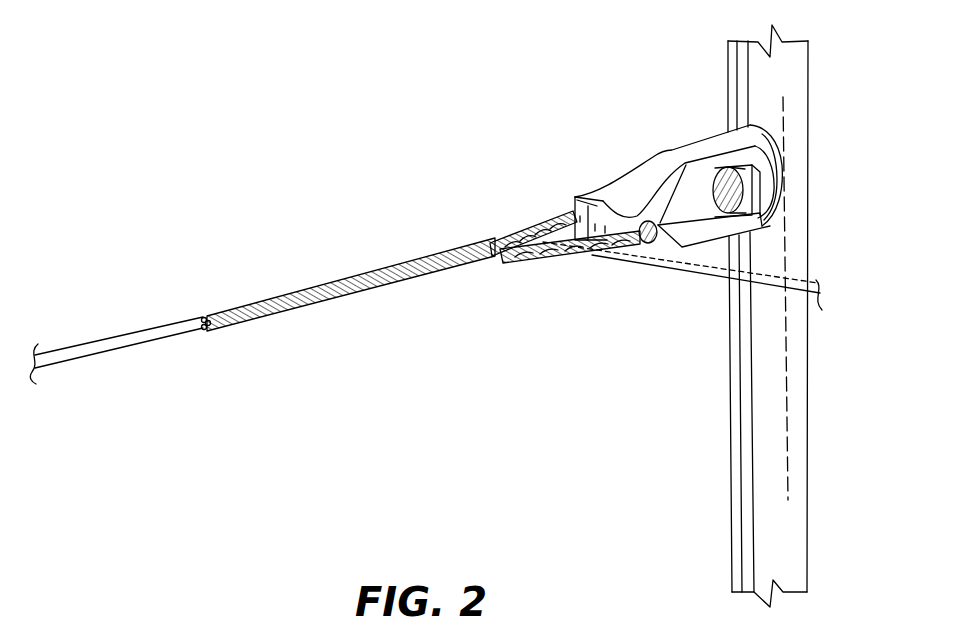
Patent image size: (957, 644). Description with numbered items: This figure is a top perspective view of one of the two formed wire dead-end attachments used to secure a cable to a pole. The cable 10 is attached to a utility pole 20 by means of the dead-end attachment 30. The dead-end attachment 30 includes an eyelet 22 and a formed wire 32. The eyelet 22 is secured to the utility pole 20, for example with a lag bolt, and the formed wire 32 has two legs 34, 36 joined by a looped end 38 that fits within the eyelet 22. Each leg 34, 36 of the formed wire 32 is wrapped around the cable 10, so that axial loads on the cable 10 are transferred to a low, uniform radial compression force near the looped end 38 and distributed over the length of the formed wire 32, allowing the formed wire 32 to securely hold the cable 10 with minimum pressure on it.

The cable 10 is at (112, 340).
The utility pole 20 is at (810, 77).
The eyelet 22 is at (672, 149).
The dead-end attachment 30 is at (579, 112).
The formed wire 32 is at (367, 289).
The leg 34 is at (537, 222).
The leg 36 is at (518, 258).
The looped end 38 is at (655, 244).